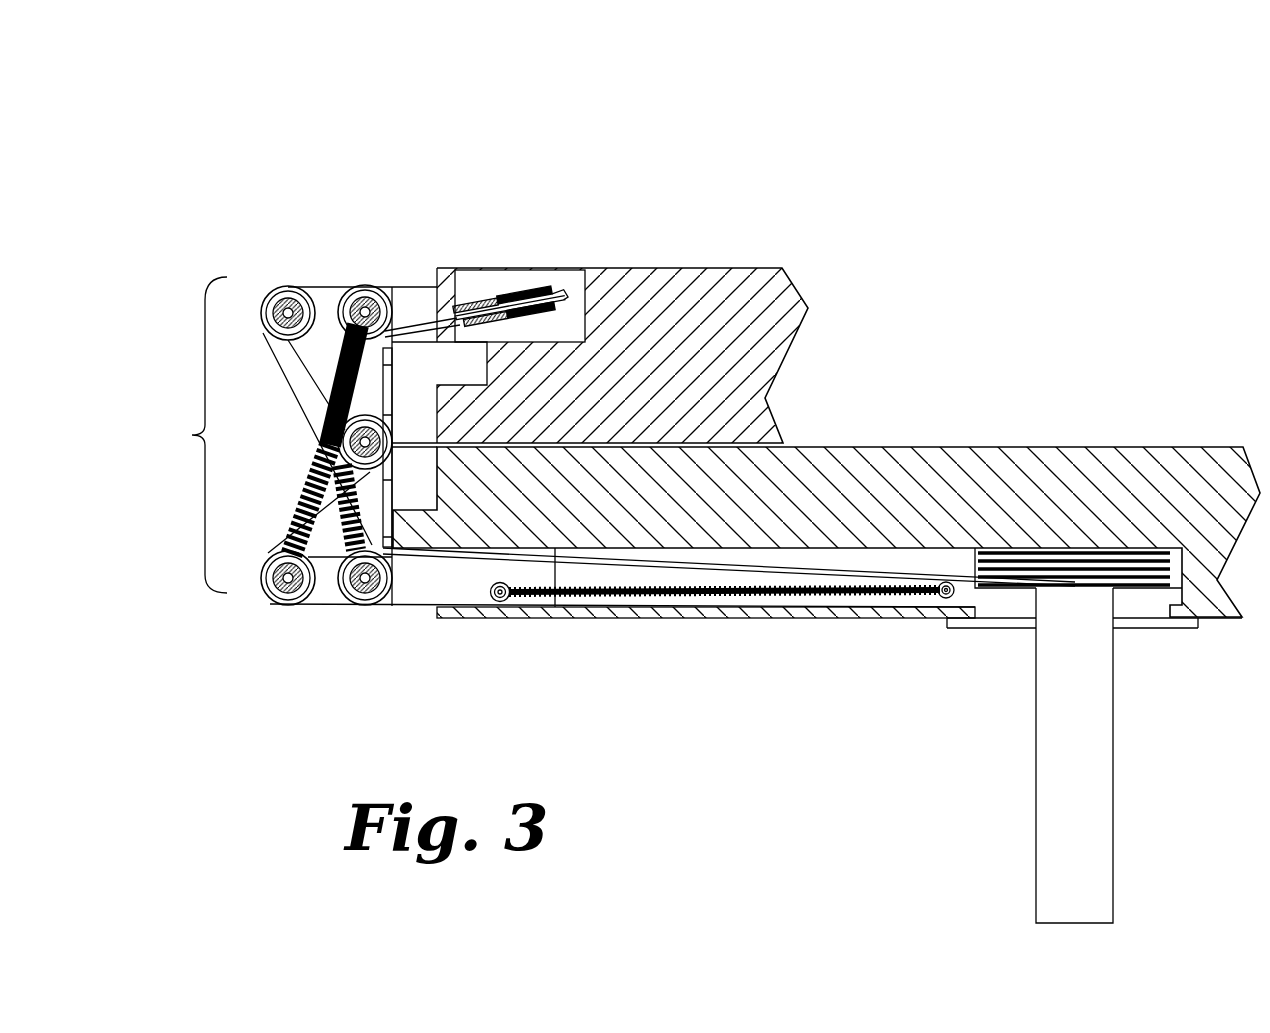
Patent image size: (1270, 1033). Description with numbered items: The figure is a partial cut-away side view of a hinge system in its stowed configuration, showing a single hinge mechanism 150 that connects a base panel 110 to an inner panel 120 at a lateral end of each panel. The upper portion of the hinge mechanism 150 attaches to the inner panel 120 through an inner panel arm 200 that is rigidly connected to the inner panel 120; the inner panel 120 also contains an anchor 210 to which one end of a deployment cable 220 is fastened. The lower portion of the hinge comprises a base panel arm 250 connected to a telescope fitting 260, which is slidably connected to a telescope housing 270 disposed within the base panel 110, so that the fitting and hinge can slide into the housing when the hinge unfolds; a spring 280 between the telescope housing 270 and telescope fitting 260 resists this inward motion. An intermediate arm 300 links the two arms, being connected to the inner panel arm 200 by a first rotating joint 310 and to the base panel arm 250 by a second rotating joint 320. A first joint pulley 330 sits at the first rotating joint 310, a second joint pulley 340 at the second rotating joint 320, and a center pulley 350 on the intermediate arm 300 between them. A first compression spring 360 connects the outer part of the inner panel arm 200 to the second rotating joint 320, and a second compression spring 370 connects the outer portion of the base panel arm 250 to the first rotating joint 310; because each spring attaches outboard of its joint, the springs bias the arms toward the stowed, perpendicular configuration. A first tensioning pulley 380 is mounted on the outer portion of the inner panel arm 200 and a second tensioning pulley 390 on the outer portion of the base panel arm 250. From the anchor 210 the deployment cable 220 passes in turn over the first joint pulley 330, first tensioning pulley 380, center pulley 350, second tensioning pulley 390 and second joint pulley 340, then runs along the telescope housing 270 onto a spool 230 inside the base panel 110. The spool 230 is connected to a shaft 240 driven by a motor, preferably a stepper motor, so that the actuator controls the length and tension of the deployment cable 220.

The base panel 110 is at (900, 447).
The inner panel 120 is at (700, 268).
The hinge mechanism 150 is at (182, 435).
The inner panel arm 200 is at (402, 305).
The anchor 210 is at (540, 285).
The deployment cable 220 is at (420, 290).
The spool 230 is at (1140, 588).
The shaft 240 is at (1077, 841).
The base panel arm 250 is at (426, 578).
The telescope fitting 260 is at (527, 573).
The telescope housing 270 is at (618, 573).
The spring 280 is at (826, 598).
The intermediate arm 300 is at (372, 390).
The first rotating joint 310 is at (332, 290).
The second rotating joint 320 is at (350, 600).
The first joint pulley 330 is at (367, 287).
The second joint pulley 340 is at (368, 600).
The center pulley 350 is at (397, 452).
The first compression spring 360 is at (308, 388).
The second compression spring 370 is at (296, 512).
The first tensioning pulley 380 is at (272, 285).
The second tensioning pulley 390 is at (272, 598).